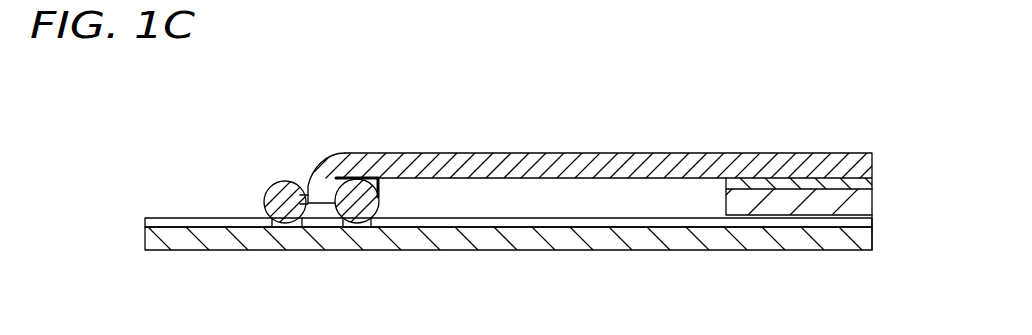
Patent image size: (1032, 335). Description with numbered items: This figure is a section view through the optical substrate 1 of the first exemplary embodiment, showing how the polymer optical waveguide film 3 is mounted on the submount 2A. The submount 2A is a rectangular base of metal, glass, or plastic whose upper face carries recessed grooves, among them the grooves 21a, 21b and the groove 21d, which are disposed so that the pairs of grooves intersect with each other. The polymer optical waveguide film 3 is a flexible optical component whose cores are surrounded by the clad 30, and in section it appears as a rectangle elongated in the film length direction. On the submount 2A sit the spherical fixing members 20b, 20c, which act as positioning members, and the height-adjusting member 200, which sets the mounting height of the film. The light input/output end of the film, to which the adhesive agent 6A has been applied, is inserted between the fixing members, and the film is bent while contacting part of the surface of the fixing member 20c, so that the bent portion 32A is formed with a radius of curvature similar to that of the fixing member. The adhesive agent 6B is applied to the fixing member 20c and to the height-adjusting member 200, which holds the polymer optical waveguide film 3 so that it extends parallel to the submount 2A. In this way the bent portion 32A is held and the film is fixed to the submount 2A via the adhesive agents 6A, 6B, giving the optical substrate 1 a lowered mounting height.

The optical substrate 1 is at (723, 85).
The polymer optical waveguide film 3 is at (596, 138).
The clad 30 is at (438, 162).
The bent portion 32A is at (320, 113).
The adhesive agent 6A is at (300, 199).
The adhesive agent 6B is at (375, 178).
The fixing member 20b is at (266, 200).
The fixing member 20c is at (374, 200).
The groove 21a is at (288, 228).
The groove 21b is at (348, 226).
The groove 21d is at (152, 218).
The height-adjusting member 200 is at (862, 201).
The submount 2A is at (647, 237).